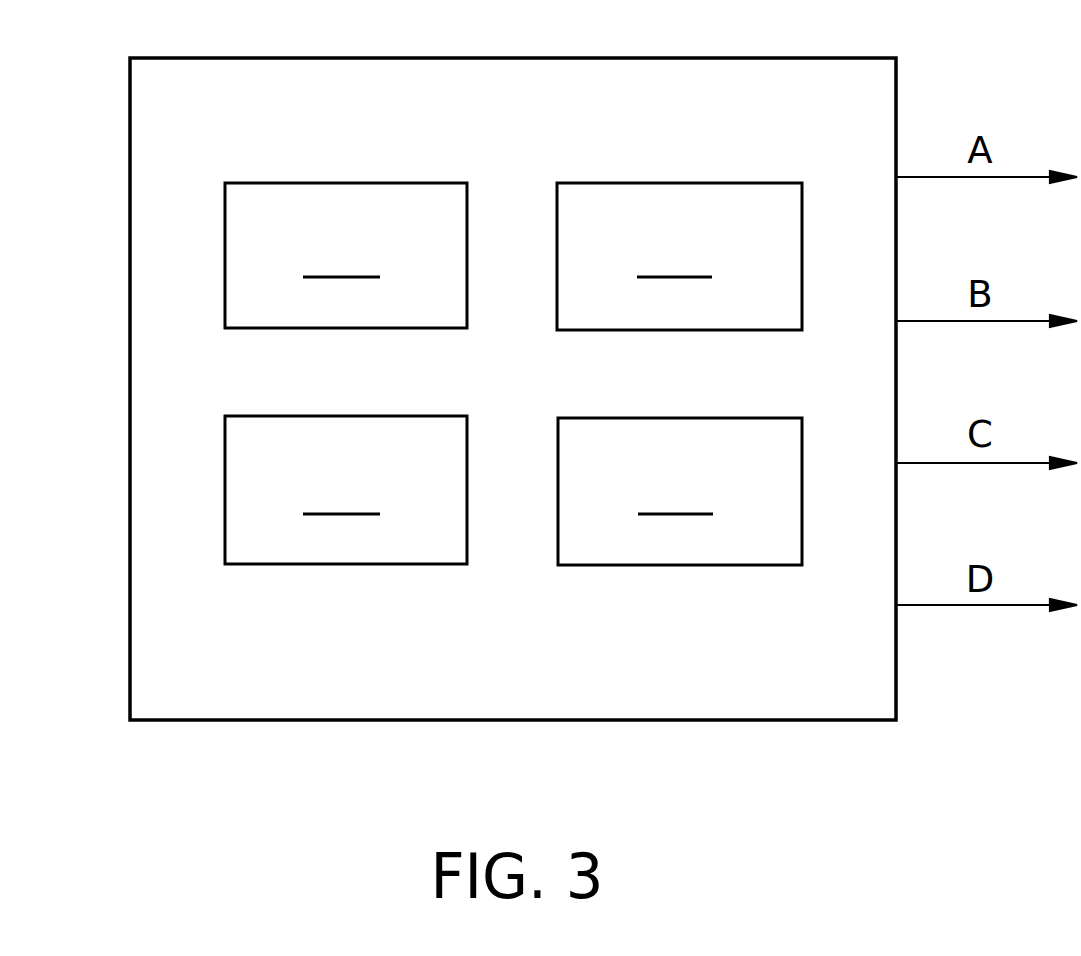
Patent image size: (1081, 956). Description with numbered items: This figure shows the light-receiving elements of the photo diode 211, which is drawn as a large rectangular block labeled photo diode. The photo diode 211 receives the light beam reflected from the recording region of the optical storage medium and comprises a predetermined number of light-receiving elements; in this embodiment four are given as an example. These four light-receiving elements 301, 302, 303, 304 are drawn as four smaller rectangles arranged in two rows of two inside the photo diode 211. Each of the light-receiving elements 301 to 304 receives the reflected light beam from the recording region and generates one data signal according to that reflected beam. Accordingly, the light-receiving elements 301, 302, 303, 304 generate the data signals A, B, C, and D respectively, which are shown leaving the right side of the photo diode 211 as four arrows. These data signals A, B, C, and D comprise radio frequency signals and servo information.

The photo diode 211 is at (510, 58).
The light-receiving element 301 is at (346, 255).
The light-receiving element 302 is at (679, 256).
The light-receiving element 303 is at (680, 491).
The light-receiving element 304 is at (346, 490).